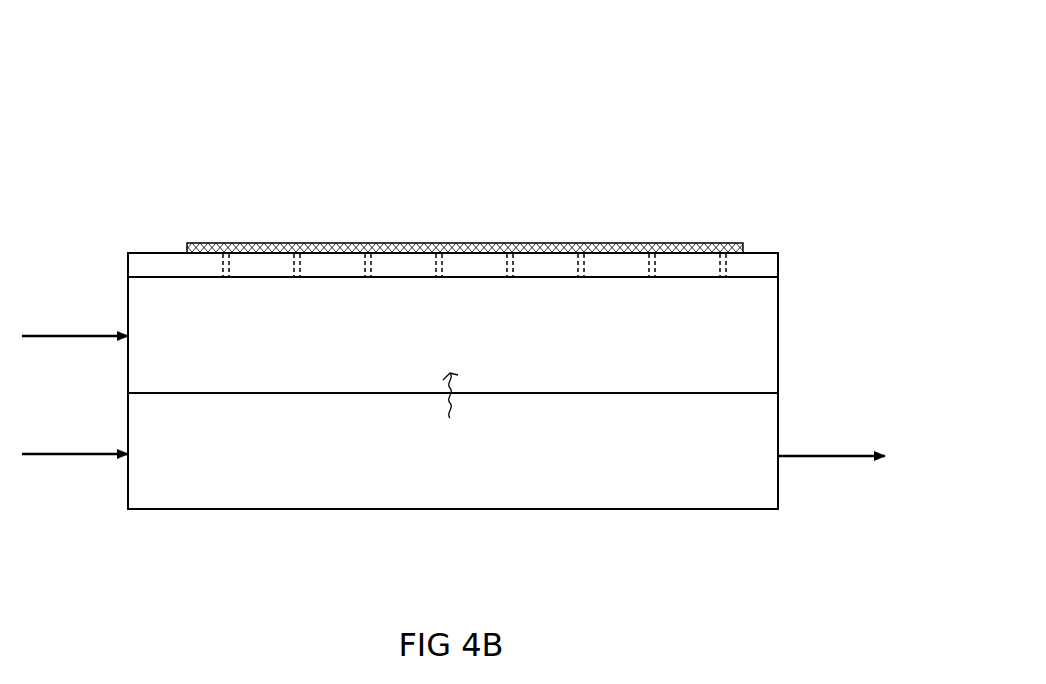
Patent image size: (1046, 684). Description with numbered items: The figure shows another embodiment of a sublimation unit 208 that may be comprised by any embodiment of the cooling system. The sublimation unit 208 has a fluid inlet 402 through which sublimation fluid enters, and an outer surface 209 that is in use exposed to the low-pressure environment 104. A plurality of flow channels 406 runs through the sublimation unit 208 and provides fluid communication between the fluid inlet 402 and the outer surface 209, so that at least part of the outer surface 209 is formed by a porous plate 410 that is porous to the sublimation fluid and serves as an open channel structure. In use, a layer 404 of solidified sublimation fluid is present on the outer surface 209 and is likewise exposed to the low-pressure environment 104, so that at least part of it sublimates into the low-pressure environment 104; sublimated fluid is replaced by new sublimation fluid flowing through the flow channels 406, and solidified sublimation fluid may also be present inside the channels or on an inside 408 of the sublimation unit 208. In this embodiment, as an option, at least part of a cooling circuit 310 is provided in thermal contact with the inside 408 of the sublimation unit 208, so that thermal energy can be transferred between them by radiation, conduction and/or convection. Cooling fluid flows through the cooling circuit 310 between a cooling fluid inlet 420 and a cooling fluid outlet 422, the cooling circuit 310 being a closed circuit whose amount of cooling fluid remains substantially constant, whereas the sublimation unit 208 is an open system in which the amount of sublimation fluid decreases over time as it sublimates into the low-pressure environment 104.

The sublimation unit 208 is at (48, 52).
The low-pressure environment 104 is at (333, 182).
The flow channels 406 is at (225, 268).
The layer of solidified sublimation fluid 404 is at (690, 247).
The outer surface 209 is at (768, 252).
The porous plate 410 is at (765, 265).
The fluid inlet 402 is at (123, 333).
The inside of the sublimation unit 408 is at (160, 357).
The cooling fluid inlet 420 is at (122, 457).
The cooling fluid outlet 422 is at (782, 458).
The cooling circuit 310 is at (517, 502).